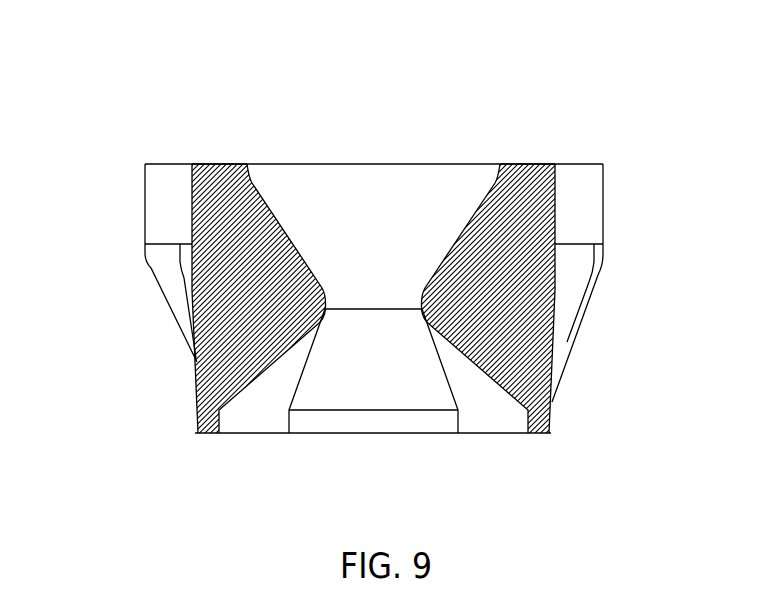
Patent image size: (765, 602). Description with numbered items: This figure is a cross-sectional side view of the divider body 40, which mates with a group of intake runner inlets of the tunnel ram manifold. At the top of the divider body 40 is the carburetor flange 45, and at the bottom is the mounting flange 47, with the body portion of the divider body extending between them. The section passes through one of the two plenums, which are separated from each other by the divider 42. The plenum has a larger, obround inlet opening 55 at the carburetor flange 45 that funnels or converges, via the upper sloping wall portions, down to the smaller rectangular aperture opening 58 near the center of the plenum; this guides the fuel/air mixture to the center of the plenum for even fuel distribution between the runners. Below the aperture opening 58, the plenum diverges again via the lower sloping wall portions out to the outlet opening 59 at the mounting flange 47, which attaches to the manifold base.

The divider body 40 is at (382, 283).
The divider 42 is at (374, 122).
The carburetor flange 45 is at (122, 227).
The mounting flange 47 is at (359, 467).
The inlet opening 55 is at (382, 234).
The aperture opening 58 is at (373, 416).
The outlet opening 59 is at (400, 424).